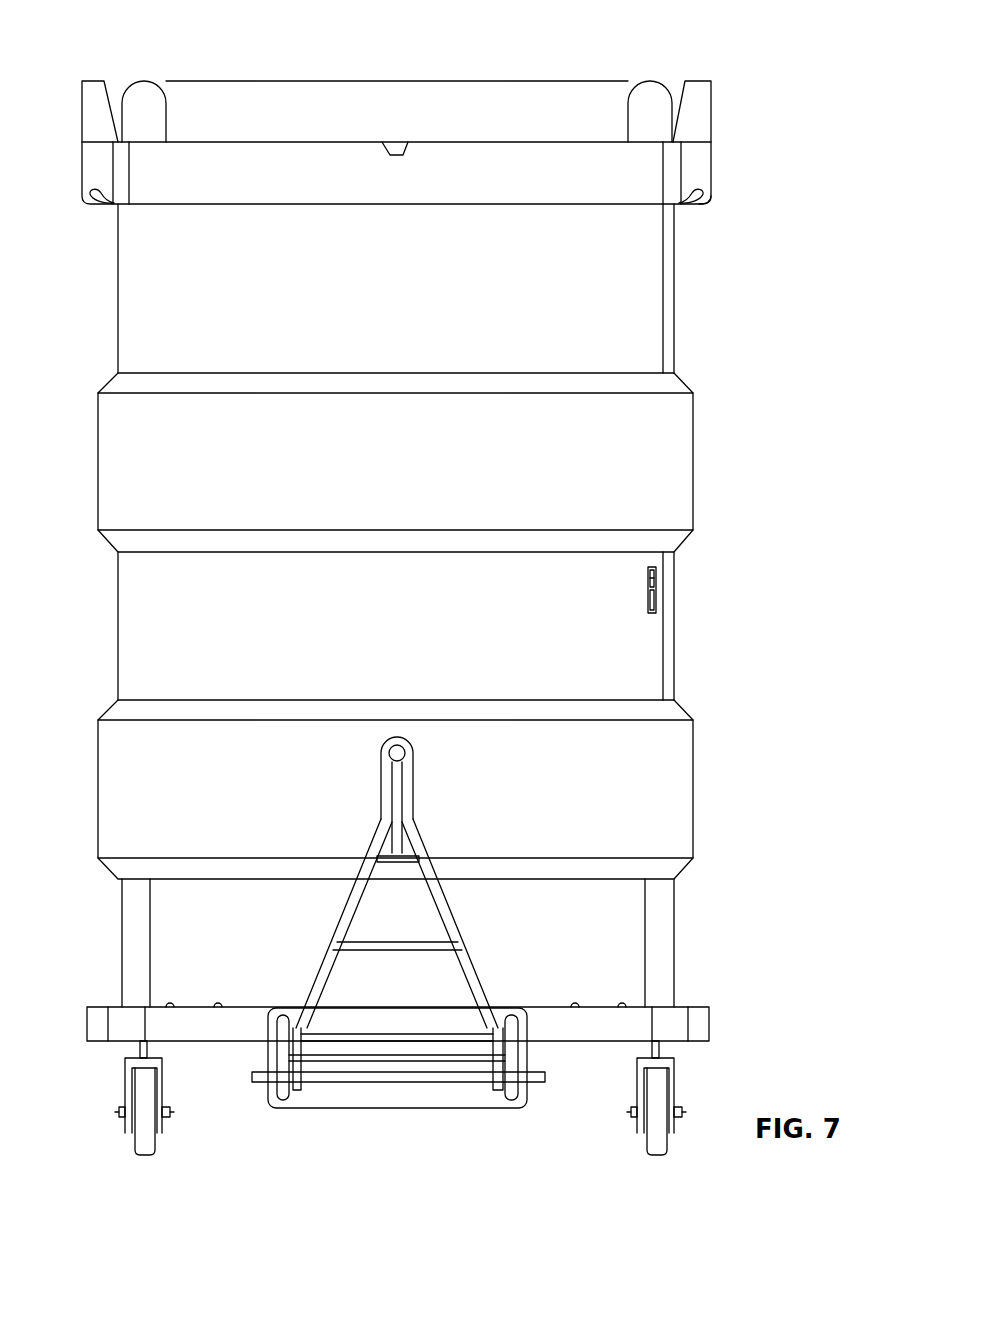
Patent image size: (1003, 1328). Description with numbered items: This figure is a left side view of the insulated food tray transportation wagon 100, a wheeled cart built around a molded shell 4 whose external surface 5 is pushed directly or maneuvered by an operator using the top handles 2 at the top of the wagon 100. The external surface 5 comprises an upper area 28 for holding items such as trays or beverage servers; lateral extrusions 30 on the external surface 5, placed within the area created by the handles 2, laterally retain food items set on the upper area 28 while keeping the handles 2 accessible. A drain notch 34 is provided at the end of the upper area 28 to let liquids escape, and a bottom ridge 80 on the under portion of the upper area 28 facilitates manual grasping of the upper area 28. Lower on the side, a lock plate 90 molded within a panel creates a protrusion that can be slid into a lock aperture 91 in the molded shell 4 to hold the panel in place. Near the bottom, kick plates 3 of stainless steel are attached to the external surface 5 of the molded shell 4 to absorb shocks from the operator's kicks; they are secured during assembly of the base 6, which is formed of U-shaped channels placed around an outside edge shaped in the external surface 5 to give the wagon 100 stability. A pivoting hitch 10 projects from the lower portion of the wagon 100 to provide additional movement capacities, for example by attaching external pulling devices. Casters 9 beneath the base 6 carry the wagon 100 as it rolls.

The insulated food tray transportation wagon 100 is at (99, 44).
The upper area 28 is at (537, 68).
The lateral extrusions 30 is at (97, 81).
The top handles 2 is at (650, 81).
The drain notch 34 is at (395, 143).
The bottom ridge 80 is at (703, 193).
The molded shell 4 is at (695, 464).
The external surface 5 is at (675, 593).
The lock plate 90 is at (654, 572).
The lock aperture 91 is at (655, 605).
The pivoting hitch 10 is at (413, 779).
The kick plates 3 is at (635, 941).
The base 6 is at (700, 1027).
The caster wheel 9 is at (158, 1124).